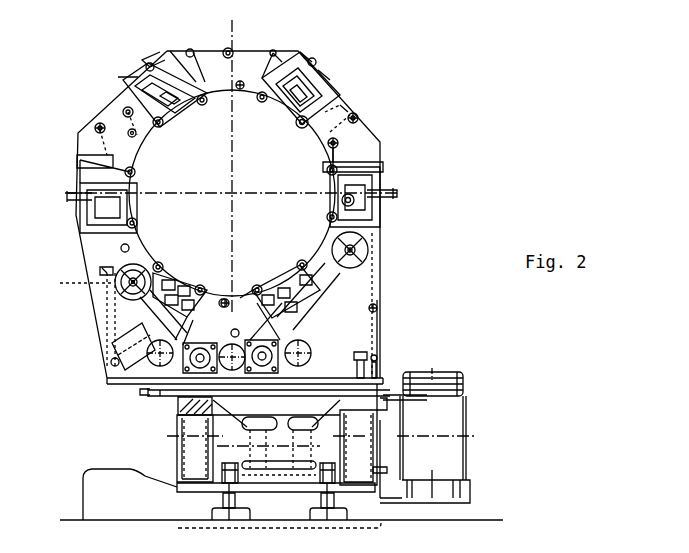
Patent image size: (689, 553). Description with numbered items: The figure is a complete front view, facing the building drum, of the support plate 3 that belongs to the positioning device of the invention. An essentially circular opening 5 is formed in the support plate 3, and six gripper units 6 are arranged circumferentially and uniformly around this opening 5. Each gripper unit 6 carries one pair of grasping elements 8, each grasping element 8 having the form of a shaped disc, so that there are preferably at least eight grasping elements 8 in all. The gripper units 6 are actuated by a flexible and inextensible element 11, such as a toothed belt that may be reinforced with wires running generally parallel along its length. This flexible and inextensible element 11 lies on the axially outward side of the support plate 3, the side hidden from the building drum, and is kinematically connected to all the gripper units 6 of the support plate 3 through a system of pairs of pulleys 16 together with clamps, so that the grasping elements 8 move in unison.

The support plate 3 is at (365, 133).
The circular opening 5 is at (163, 235).
The gripper unit 6 is at (320, 61).
The grasping element 8 is at (335, 170).
The flexible and inextensible element 11 is at (340, 110).
The pulley 16 is at (204, 78).